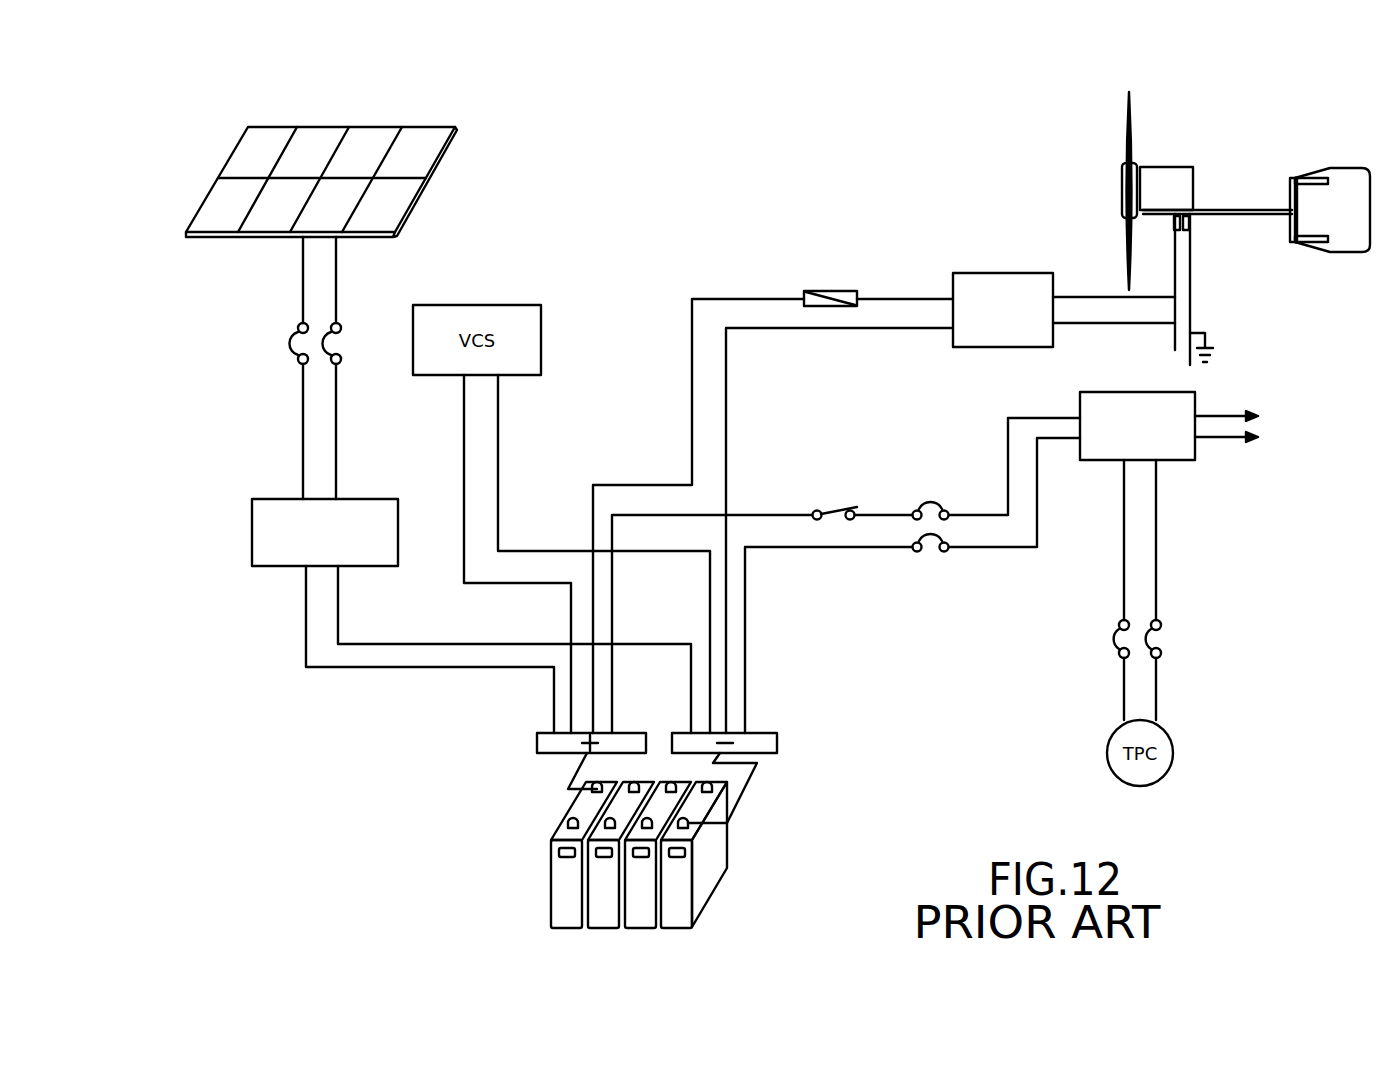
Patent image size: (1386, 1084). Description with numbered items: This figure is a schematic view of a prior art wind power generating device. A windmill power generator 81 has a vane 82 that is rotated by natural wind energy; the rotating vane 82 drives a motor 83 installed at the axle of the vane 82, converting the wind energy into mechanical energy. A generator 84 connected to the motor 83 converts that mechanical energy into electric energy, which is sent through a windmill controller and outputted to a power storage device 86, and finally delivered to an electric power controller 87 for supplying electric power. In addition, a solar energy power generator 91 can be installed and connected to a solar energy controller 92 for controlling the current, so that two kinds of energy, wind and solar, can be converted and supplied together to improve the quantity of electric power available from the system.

The windmill power generator 81 is at (1246, 210).
The vane 82 is at (1133, 163).
The motor 83 is at (1182, 182).
The generator 84 is at (1330, 180).
The power storage device 86 is at (713, 852).
The electric power controller 87 is at (1157, 438).
The solar energy power generator 91 is at (243, 164).
The solar energy controller 92 is at (273, 540).